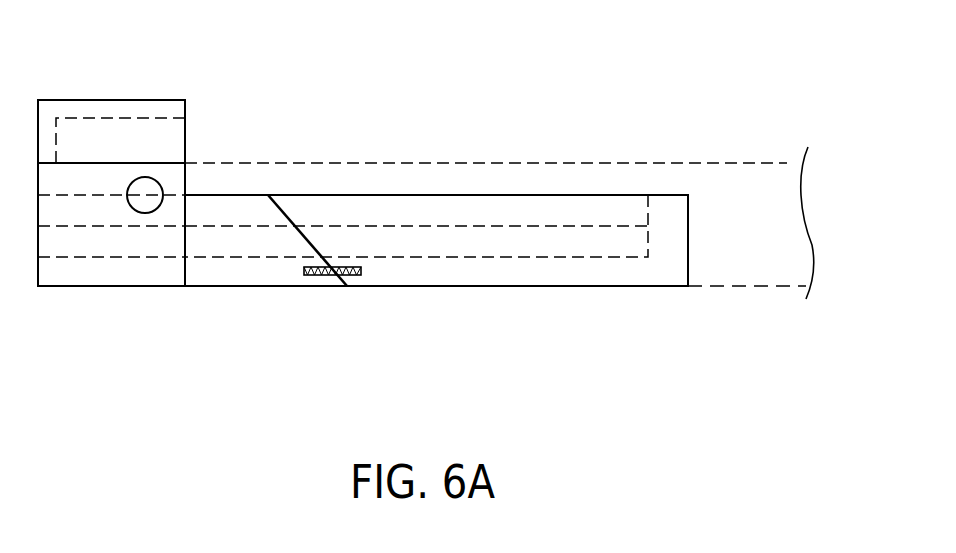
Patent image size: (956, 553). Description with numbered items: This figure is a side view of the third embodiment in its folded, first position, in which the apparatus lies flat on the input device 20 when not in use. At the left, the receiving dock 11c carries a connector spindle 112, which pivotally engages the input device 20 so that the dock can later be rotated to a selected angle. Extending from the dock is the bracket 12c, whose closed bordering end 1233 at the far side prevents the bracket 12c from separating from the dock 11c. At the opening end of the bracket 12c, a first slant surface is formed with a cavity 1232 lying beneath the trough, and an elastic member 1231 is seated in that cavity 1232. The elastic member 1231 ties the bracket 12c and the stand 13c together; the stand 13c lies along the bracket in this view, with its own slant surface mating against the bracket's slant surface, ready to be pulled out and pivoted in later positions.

The receiving dock 11c is at (127, 87).
The bracket 12c is at (558, 180).
The stand 13c is at (234, 312).
The connector spindle 112 is at (158, 184).
The elastic member 1231 is at (323, 277).
The cavity 1232 is at (361, 269).
The closed bordering end 1233 is at (650, 203).
The input device 20 is at (782, 177).